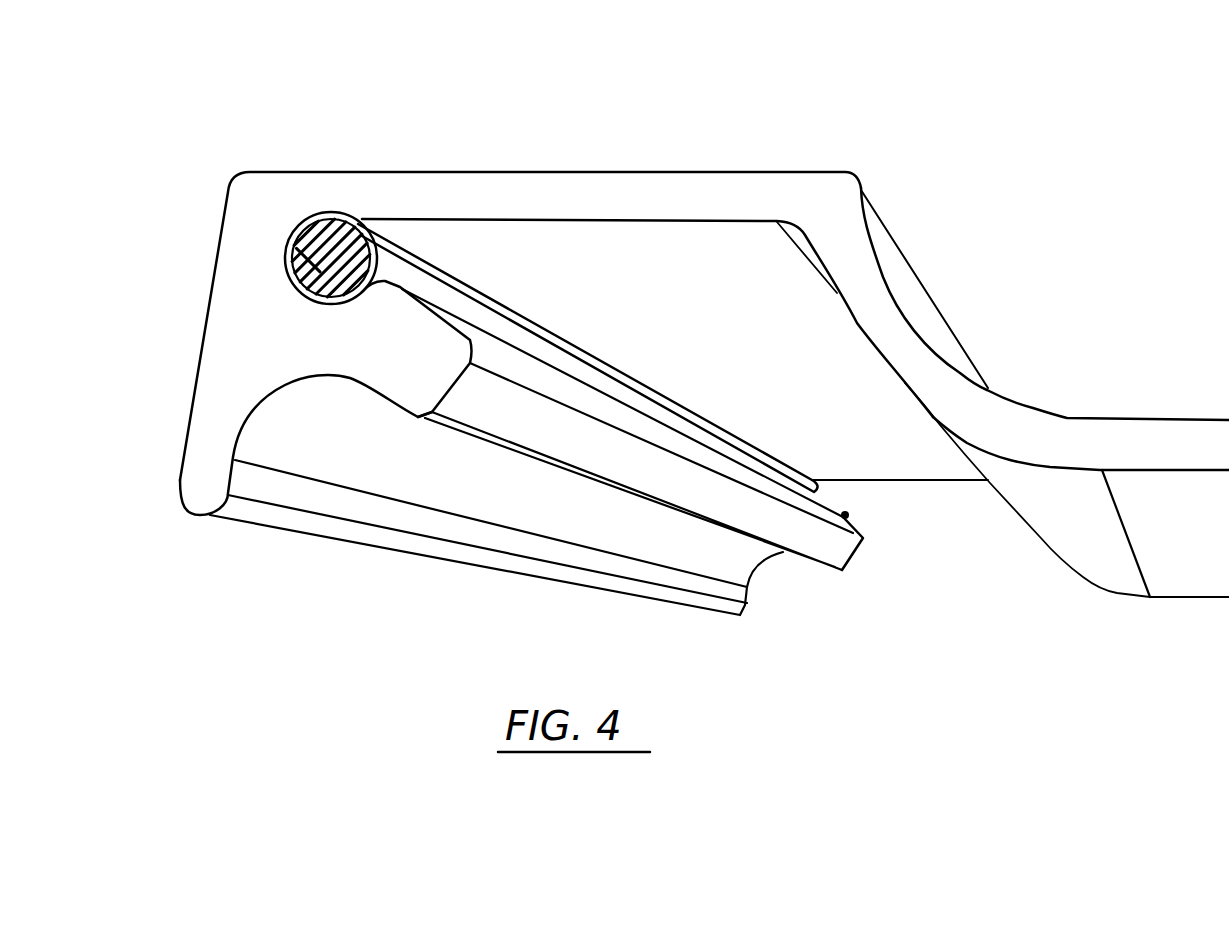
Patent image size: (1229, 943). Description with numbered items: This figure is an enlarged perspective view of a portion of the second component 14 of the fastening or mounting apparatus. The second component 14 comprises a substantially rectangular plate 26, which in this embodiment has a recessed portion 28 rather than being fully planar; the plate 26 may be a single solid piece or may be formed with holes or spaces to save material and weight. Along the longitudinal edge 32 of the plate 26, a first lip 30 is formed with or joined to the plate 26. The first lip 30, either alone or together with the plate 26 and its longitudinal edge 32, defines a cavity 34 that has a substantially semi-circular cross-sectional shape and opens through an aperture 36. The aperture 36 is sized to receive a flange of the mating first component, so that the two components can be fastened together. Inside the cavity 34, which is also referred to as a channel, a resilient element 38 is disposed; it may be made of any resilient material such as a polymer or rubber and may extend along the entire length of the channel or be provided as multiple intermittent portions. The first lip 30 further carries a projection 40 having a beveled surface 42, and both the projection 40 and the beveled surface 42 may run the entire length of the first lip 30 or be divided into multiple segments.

The second component 14 is at (807, 110).
The plate 26 is at (1185, 543).
The recessed portion 28 is at (1070, 415).
The first lip 30 is at (268, 350).
The longitudinal edge 32 is at (382, 192).
The cavity 34 is at (330, 212).
The aperture 36 is at (822, 480).
The resilient element 38 is at (302, 255).
The projection 40 is at (415, 370).
The beveled surface 42 is at (467, 333).